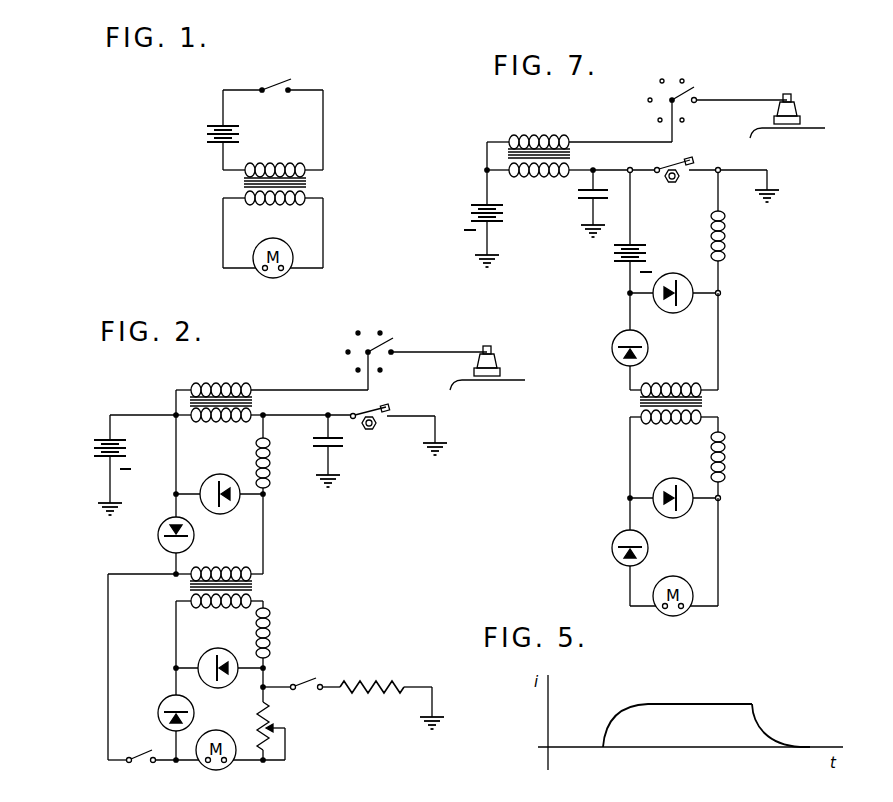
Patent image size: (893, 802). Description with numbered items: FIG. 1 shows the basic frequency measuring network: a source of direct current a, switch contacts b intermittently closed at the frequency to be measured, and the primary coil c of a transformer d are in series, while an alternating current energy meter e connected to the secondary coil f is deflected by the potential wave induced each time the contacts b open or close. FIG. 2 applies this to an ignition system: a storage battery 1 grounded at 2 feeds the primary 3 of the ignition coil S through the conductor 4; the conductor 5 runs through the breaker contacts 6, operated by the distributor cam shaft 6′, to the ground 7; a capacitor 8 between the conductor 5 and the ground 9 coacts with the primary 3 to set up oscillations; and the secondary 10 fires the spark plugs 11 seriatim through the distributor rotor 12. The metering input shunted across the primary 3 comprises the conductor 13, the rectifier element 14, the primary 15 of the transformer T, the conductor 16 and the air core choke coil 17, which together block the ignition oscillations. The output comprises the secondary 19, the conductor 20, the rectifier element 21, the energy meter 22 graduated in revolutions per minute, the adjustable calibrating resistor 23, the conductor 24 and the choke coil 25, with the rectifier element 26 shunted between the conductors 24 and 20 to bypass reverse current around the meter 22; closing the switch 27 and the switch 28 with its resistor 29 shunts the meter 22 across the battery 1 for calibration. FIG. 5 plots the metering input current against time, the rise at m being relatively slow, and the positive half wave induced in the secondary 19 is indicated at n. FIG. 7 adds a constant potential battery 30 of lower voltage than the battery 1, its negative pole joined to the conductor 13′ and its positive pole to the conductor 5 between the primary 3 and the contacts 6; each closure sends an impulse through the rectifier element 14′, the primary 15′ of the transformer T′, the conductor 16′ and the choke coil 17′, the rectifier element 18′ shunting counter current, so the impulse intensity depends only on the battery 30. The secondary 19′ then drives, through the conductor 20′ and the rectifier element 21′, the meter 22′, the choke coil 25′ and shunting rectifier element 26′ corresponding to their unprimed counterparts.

In FIG. 1, the source of direct current a is at (203, 135).
In FIG. 1, the switch contacts b is at (273, 80).
In FIG. 1, the primary coil c is at (277, 166).
In FIG. 1, the transformer d is at (308, 184).
In FIG. 1, the energy meter e is at (273, 278).
In FIG. 1, the transformer secondary coil f is at (288, 206).
In FIG. 2, the source of electrical potential 1 is at (93, 453).
In FIG. 7, the source of electrical potential 1 is at (468, 215).
In FIG. 2, the ground 2 is at (103, 511).
In FIG. 2, the primary of the ignition coil 3 is at (222, 423).
In FIG. 7, the primary of the ignition coil 3 is at (537, 178).
In FIG. 2, the conductor 4 is at (135, 406).
In FIG. 2, the conductor 5 is at (290, 415).
In FIG. 7, the conductor 5 is at (604, 170).
In FIG. 2, the breaker contacts 6 is at (389, 410).
In FIG. 7, the breaker contacts 6 is at (693, 163).
In FIG. 2, the distributor cam shaft 6′ is at (371, 431).
In FIG. 7, the distributor cam shaft 6′ is at (676, 184).
In FIG. 2, the ground 7 is at (443, 442).
In FIG. 7, the ground 7 is at (779, 194).
In FIG. 2, the capacitor 8 is at (319, 443).
In FIG. 7, the capacitor 8 is at (582, 193).
In FIG. 2, the ground 9 is at (337, 486).
In FIG. 7, the ground 9 is at (589, 236).
In FIG. 2, the secondary of the coil 10 is at (224, 382).
In FIG. 7, the secondary of the coil 10 is at (539, 135).
In FIG. 2, the spark plugs 11 is at (496, 363).
In FIG. 7, the spark plugs 11 is at (796, 110).
In FIG. 2, the rotor of the distributor 12 is at (394, 345).
In FIG. 7, the rotor of the distributor 12 is at (697, 91).
In FIG. 2, the conductor 13 is at (170, 456).
In FIG. 2, the rectifier element 14 is at (157, 536).
In FIG. 2, the primary of the transformer T 15 is at (224, 567).
In FIG. 2, the conductor 16 is at (268, 531).
In FIG. 2, the reactive resistor 17 is at (269, 487).
In FIG. 2, the secondary of the transformer T 19 is at (226, 608).
In FIG. 2, the conductor 20 is at (172, 632).
In FIG. 2, the copper oxide rectifier element 21 is at (158, 712).
In FIG. 2, the energy meter 22 is at (216, 771).
In FIG. 2, the adjustable resistor 23 is at (281, 713).
In FIG. 7, the conductor 24 is at (722, 546).
In FIG. 2, the choke coil 25 is at (272, 638).
In FIG. 2, the rectifier element 26 is at (218, 681).
In FIG. 2, the switch 27 is at (140, 752).
In FIG. 2, the switch 28 is at (322, 672).
In FIG. 2, the resistor 29 is at (388, 680).
In FIG. 7, the battery 30 is at (617, 264).
In FIG. 2, the ignition coil S is at (188, 388).
In FIG. 7, the ignition coil S is at (506, 141).
In FIG. 2, the transformer T is at (256, 590).
In FIG. 7, the conductor 13′ is at (624, 310).
In FIG. 7, the rectifier element 14′ is at (611, 349).
In FIG. 7, the primary of the transformer T′ 15′ is at (675, 383).
In FIG. 7, the conductor 16′ is at (722, 333).
In FIG. 7, the choke coil 17′ is at (727, 246).
In FIG. 7, the rectifier element 18′ is at (674, 273).
In FIG. 7, the secondary of the transformer T′ 19′ is at (675, 425).
In FIG. 7, the conductor 20′ is at (624, 471).
In FIG. 7, the rectifier element 21′ is at (611, 549).
In FIG. 7, the meter 22′ is at (673, 618).
In FIG. 7, the choke coil 25′ is at (727, 466).
In FIG. 7, the rectifier element 26′ is at (674, 519).
In FIG. 7, the transformer T′ is at (707, 406).
In FIG. 5, the current build-up curve m is at (620, 704).
In FIG. 5, the half wave of positive potential n is at (762, 730).